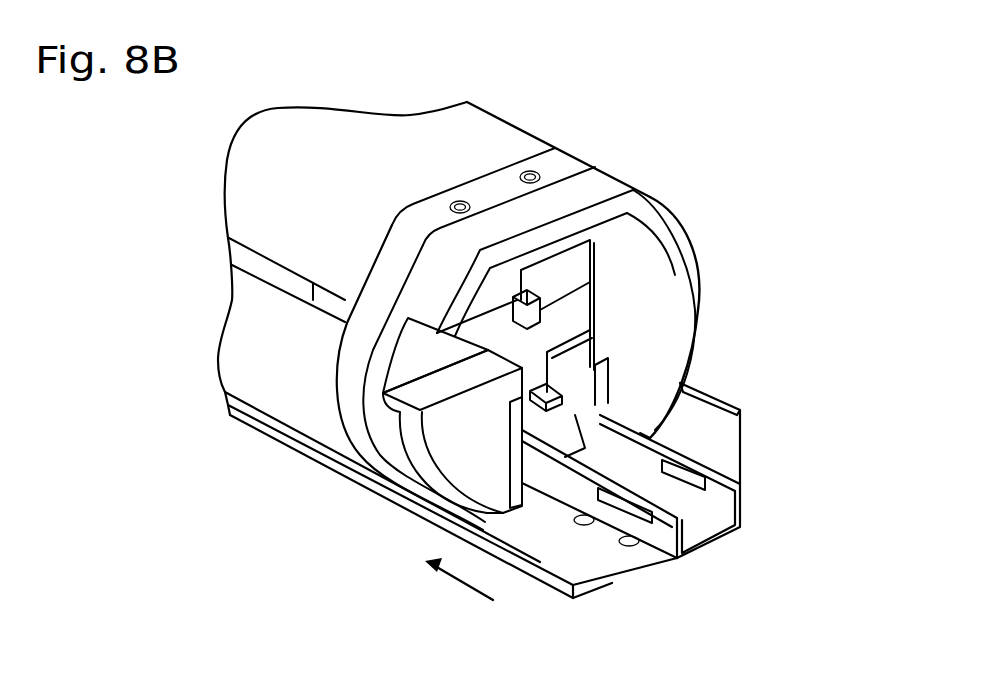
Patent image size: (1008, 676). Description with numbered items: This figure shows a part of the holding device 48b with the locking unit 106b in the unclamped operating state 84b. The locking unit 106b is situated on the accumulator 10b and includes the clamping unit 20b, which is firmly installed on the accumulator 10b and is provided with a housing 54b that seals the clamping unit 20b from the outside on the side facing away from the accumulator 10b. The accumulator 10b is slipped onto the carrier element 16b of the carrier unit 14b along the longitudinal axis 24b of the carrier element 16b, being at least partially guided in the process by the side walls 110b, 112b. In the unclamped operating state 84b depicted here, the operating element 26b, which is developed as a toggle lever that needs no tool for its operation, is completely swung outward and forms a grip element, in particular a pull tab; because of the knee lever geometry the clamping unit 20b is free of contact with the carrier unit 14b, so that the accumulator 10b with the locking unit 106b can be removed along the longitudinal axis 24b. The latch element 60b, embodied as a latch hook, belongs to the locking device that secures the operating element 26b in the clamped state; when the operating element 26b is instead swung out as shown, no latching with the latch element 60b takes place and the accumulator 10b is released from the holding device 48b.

The accumulator 10b is at (252, 190).
The locking unit 106b is at (722, 126).
The holding device 48b is at (650, 172).
The housing 54b is at (660, 280).
The clamping unit 20b is at (654, 317).
The latch element 60b is at (540, 312).
The carrier unit 14b is at (730, 452).
The side wall 110b is at (724, 462).
The operating element 26b is at (697, 530).
The carrier element 16b is at (722, 428).
The unclamped operating state 84b is at (775, 405).
The side wall 112b is at (540, 556).
The longitudinal axis 24b is at (467, 588).